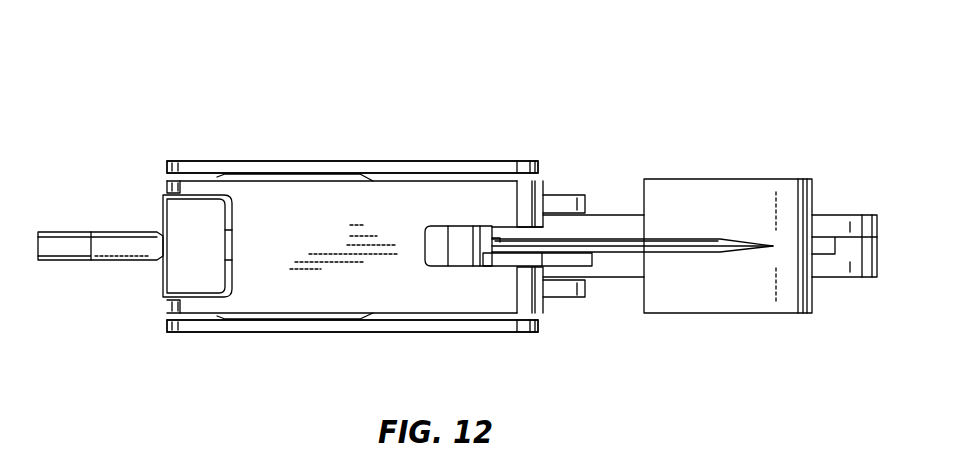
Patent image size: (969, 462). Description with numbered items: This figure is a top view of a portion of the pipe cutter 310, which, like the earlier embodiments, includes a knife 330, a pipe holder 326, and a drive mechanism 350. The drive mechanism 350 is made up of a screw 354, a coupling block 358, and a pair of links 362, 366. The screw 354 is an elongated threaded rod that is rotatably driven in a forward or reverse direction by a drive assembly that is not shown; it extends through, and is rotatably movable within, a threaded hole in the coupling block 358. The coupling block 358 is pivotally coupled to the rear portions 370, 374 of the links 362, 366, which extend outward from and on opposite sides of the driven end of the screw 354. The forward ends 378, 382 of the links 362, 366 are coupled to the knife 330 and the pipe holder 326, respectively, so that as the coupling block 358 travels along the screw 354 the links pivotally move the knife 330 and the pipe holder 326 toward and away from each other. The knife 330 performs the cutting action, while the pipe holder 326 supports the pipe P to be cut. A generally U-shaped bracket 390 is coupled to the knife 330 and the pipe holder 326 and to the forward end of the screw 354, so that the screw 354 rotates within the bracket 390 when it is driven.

The pipe cutter 310 is at (580, 68).
The drive mechanism 350 is at (372, 150).
The link 366 is at (295, 162).
The rear portion of link 374 is at (190, 162).
The rear portion of link 370 is at (188, 305).
The forward end of link 382 is at (505, 168).
The forward end of link 378 is at (505, 293).
The link 362 is at (345, 285).
The coupling block 358 is at (172, 212).
The screw 354 is at (63, 245).
The bracket 390 is at (562, 200).
The knife 330 is at (622, 250).
The pipe P is at (724, 195).
The pipe holder 326 is at (836, 222).